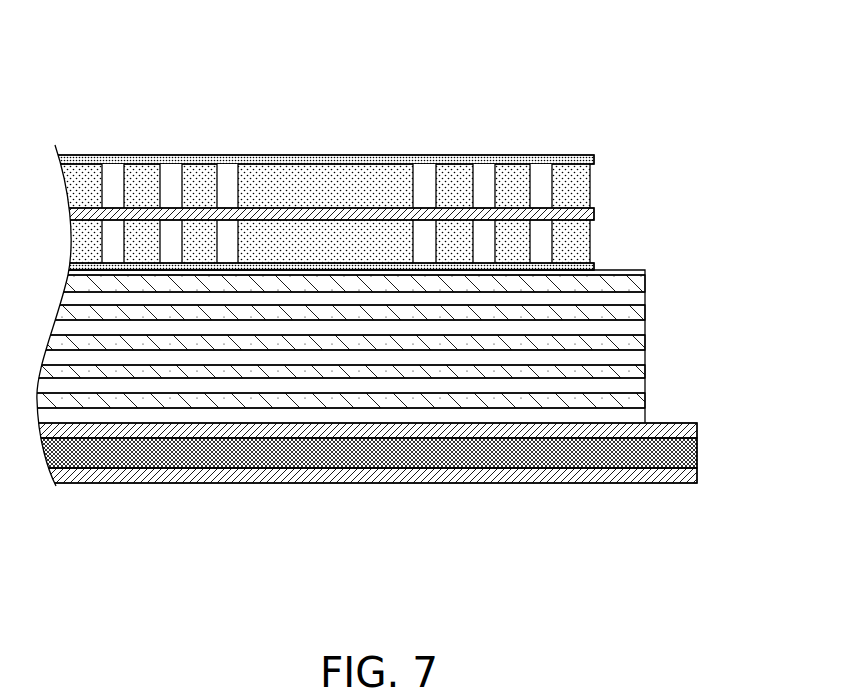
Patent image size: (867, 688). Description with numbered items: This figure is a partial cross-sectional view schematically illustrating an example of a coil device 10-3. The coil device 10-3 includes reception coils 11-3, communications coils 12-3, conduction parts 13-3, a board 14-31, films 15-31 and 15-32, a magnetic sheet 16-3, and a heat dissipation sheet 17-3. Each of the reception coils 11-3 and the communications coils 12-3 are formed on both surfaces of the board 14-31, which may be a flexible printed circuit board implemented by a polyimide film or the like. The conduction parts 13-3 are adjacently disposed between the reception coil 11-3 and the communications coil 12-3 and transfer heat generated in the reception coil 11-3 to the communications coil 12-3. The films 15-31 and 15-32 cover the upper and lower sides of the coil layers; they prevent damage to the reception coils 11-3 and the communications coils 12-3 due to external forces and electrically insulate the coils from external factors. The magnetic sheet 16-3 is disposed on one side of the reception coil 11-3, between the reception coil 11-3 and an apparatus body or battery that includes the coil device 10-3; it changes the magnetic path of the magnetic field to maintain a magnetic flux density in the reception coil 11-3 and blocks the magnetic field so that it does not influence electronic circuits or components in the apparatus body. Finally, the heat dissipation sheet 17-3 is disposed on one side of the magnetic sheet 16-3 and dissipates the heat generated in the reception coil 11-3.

The coil device 10-3 is at (400, 35).
The reception coils 11-3 is at (230, 227).
The communications coils 12-3 is at (487, 225).
The conduction parts 13-3 is at (373, 245).
The board 14-31 is at (595, 207).
The film 15-31 is at (595, 160).
The film 15-32 is at (595, 268).
The magnetic sheet 16-3 is at (638, 329).
The heat dissipation sheet 17-3 is at (688, 433).